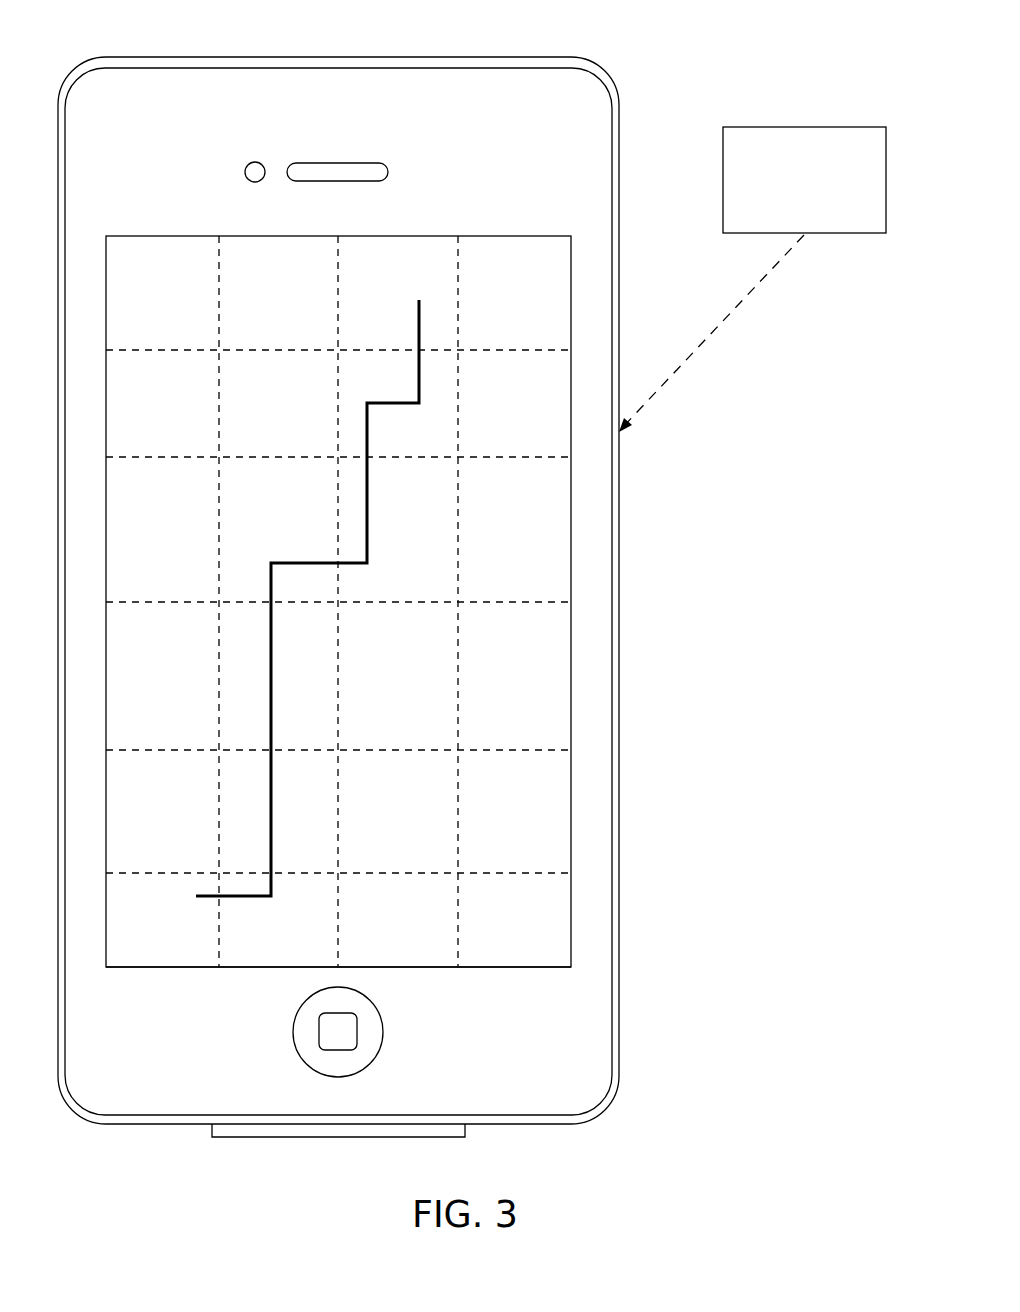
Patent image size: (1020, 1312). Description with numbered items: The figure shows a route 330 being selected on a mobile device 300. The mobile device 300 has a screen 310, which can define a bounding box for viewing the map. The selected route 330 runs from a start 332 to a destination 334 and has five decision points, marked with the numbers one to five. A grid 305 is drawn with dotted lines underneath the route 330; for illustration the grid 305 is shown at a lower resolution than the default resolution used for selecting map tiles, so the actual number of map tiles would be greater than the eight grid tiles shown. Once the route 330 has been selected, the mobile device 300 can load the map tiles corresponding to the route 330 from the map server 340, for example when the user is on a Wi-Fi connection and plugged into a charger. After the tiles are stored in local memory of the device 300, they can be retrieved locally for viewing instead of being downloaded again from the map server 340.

The mobile device 300 is at (166, 57).
The grid 305 is at (218, 316).
The screen 310 is at (517, 967).
The route 330 is at (380, 528).
The start 332 is at (168, 912).
The destination 334 is at (419, 266).
The map server 340 is at (723, 200).